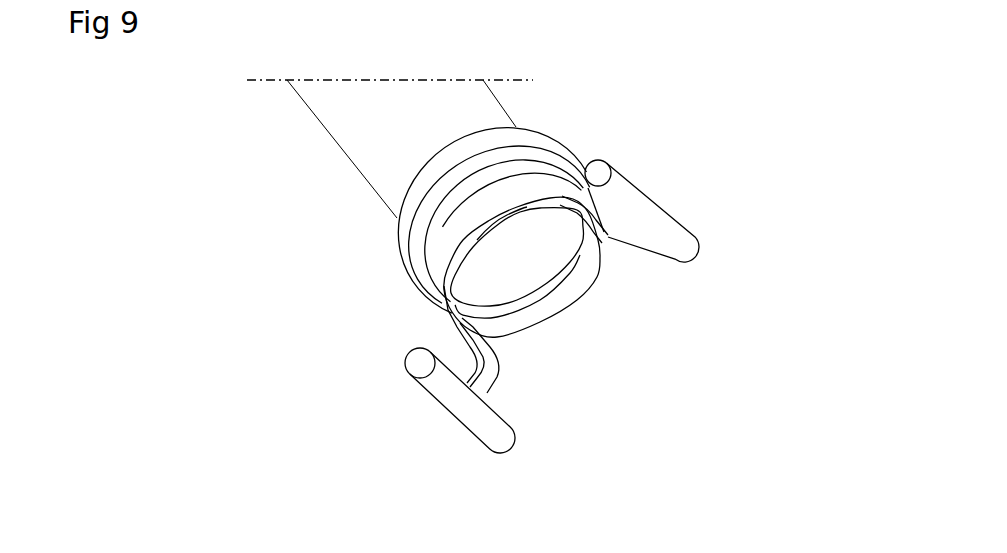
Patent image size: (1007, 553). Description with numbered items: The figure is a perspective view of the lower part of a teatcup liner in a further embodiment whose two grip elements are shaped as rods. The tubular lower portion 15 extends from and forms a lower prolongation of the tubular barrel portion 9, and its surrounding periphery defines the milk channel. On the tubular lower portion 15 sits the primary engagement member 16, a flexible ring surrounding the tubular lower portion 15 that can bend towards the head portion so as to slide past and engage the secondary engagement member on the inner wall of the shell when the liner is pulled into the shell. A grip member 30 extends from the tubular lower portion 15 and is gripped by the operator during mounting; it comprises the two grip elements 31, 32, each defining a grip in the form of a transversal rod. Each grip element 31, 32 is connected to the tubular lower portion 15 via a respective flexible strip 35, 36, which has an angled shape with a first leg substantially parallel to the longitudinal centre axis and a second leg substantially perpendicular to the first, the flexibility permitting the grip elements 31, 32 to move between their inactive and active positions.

The tubular barrel portion 9 is at (341, 111).
The tubular lower portion 15 is at (443, 253).
The primary engagement member 16 is at (540, 150).
The grip member 30 is at (726, 232).
The grip element 31 is at (620, 190).
The grip element 32 is at (438, 392).
The flexible strip 35 is at (623, 232).
The flexible strip 36 is at (492, 375).